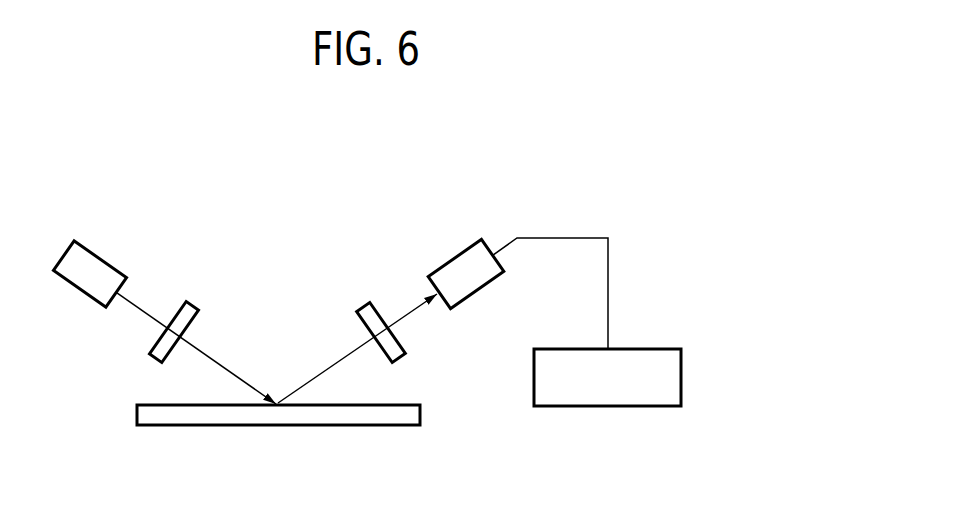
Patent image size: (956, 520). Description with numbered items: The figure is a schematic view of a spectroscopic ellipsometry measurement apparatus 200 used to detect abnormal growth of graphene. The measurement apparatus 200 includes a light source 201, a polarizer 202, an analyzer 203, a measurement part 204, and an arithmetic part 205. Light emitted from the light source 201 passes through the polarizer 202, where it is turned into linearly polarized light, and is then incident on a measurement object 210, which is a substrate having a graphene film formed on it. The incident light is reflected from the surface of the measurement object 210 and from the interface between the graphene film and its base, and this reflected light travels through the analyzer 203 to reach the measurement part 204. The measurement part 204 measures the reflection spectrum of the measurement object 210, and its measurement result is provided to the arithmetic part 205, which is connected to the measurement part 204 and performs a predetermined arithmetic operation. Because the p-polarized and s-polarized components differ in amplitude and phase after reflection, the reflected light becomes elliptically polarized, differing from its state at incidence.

The measurement apparatus 200 is at (514, 147).
The light source 201 is at (99, 254).
The polarizer 202 is at (196, 301).
The analyzer 203 is at (368, 303).
The measurement part 204 is at (455, 255).
The arithmetic part 205 is at (637, 407).
The measurement object 210 is at (362, 427).